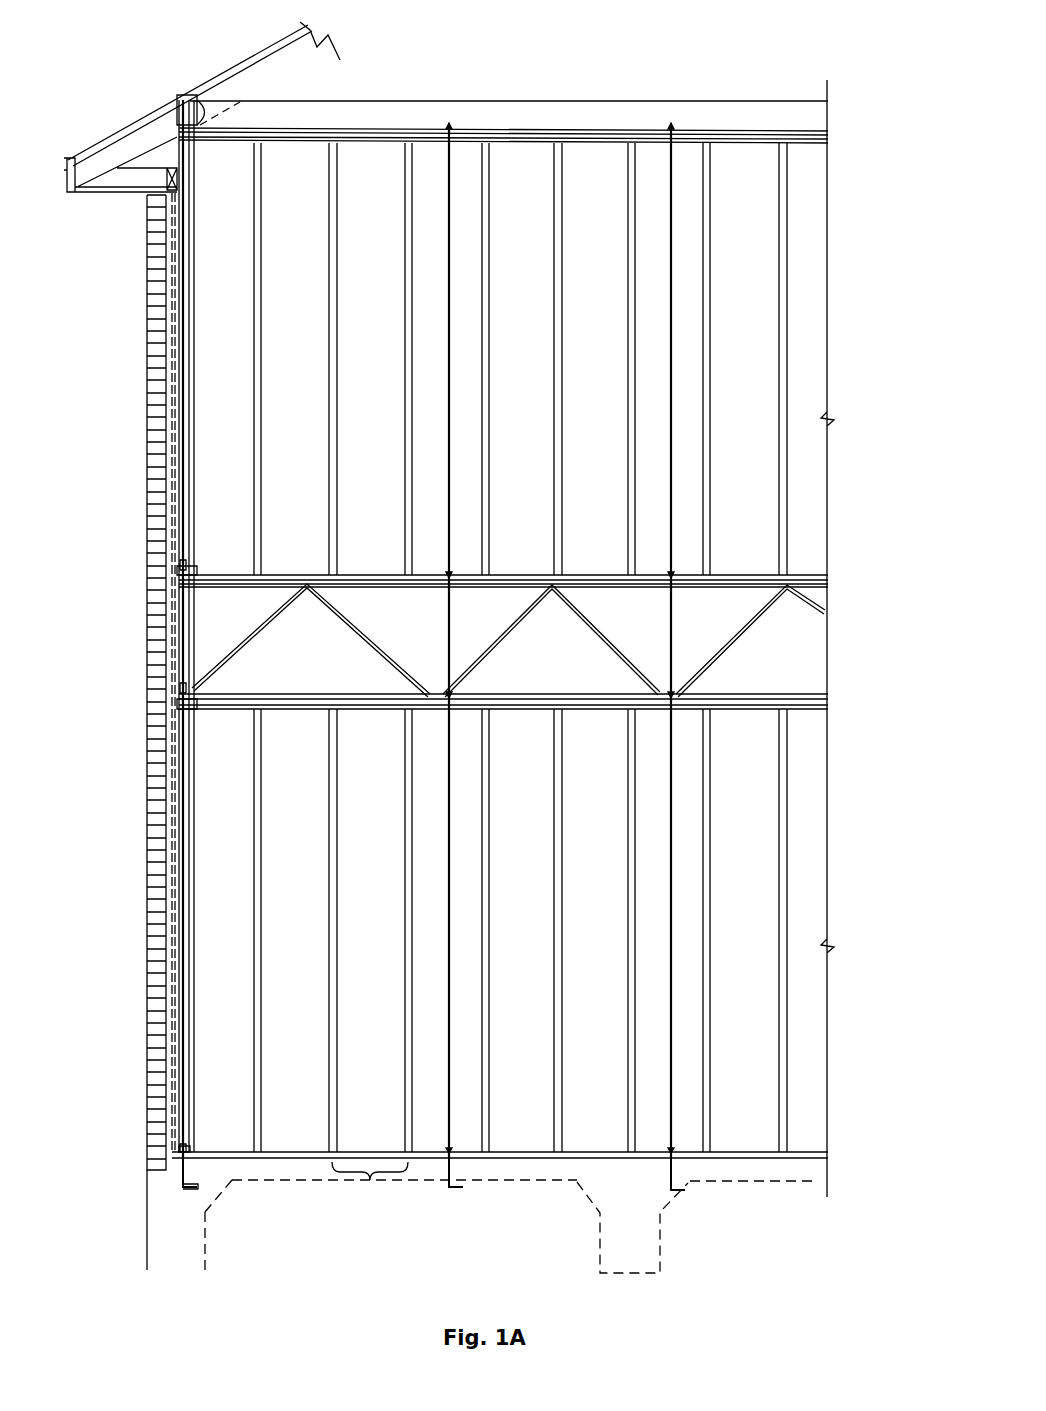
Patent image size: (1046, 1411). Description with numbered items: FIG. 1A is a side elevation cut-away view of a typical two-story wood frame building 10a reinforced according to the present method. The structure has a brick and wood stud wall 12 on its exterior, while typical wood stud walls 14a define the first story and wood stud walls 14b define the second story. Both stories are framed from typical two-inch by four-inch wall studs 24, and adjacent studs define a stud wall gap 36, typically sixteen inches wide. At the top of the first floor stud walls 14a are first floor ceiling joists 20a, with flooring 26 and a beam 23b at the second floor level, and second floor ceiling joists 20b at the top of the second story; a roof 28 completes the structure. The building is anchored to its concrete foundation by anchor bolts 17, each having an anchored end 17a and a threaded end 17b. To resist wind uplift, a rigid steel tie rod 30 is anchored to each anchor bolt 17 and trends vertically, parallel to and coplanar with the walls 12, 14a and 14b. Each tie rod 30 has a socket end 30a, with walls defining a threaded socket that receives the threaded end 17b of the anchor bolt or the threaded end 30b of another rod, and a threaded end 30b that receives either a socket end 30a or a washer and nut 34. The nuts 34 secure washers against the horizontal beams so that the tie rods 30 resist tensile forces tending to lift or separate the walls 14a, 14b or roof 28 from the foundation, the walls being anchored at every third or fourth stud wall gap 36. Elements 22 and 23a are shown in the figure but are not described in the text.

The two-story wood frame building 10a is at (893, 158).
The brick and wood stud wall 12 is at (150, 1005).
The first story wood stud wall 14a is at (808, 880).
The second story wood stud wall 14b is at (805, 383).
The anchor bolt 17 is at (180, 1178).
The anchored end 17a is at (190, 1192).
The threaded end 17b is at (200, 1149).
The first floor ceiling joist 20a is at (831, 693).
The second floor ceiling joist 20b is at (831, 127).
The bottom plate of upper wall 22 is at (803, 573).
The floor truss bottom chord 23a is at (810, 693).
The beam 23b is at (826, 590).
The wall stud 24 is at (777, 405).
The flooring 26 is at (828, 586).
The roof 28 is at (113, 147).
The tie rod 30 is at (198, 395).
The socket end 30a is at (185, 564).
The threaded end 30b is at (192, 95).
The nut 34 is at (190, 120).
The stud wall gap 36 is at (370, 1186).